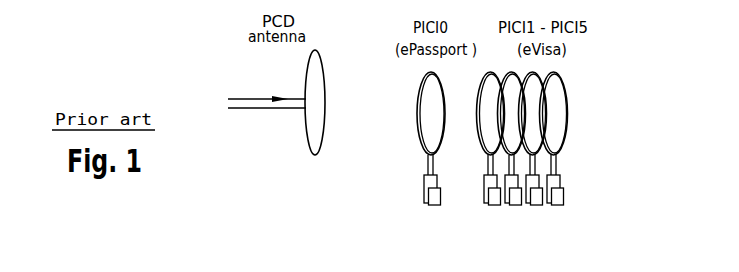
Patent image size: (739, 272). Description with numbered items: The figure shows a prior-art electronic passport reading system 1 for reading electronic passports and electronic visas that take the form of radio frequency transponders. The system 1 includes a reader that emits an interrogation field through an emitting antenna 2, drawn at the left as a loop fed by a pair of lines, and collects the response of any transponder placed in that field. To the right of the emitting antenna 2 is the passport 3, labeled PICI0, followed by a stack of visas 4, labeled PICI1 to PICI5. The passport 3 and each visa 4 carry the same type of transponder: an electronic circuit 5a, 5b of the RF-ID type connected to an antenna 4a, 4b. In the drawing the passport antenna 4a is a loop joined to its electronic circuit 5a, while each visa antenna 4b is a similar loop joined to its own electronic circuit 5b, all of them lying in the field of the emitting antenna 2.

The system 1 is at (219, 58).
The emitting antenna 2 is at (305, 132).
The passport 3 is at (399, 106).
The antenna 4a is at (417, 128).
The electronic circuit 5a is at (436, 205).
The visa 4 is at (591, 131).
The antenna 4b is at (565, 89).
The electronic circuit 5b is at (564, 198).